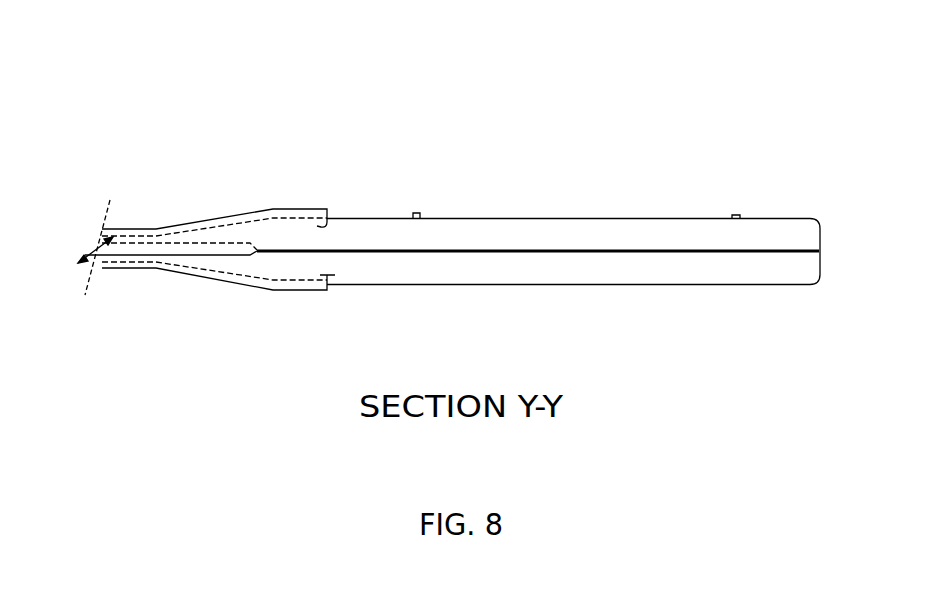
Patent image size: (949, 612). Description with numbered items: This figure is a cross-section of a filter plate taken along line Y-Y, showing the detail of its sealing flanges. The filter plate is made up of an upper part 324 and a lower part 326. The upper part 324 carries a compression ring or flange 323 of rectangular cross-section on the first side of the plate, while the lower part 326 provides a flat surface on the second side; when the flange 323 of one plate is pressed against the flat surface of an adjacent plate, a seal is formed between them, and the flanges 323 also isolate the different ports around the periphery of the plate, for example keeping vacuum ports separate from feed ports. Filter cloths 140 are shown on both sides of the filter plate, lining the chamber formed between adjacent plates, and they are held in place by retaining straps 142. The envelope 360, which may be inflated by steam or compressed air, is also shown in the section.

The filter cloth 140 is at (157, 269).
The retaining strap 142 is at (325, 227).
The compression ring/flange 323 is at (422, 214).
The upper part 324 is at (803, 238).
The lower part 326 is at (805, 268).
The envelope 360 is at (203, 247).